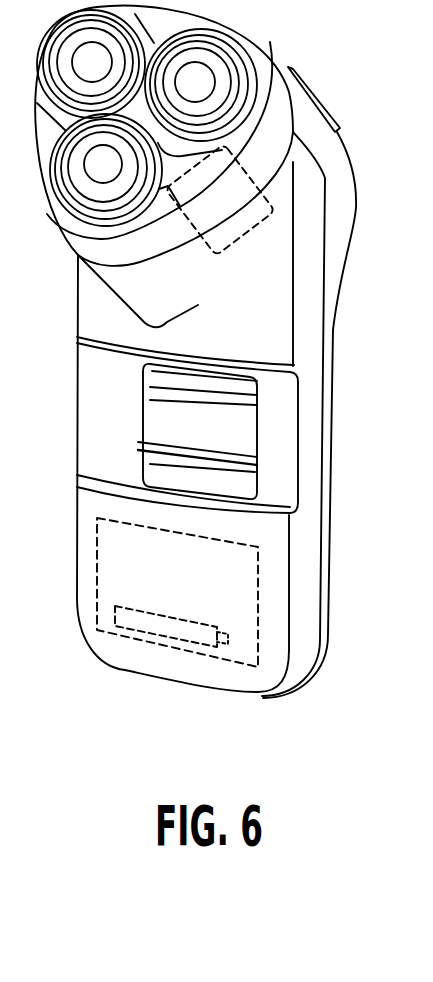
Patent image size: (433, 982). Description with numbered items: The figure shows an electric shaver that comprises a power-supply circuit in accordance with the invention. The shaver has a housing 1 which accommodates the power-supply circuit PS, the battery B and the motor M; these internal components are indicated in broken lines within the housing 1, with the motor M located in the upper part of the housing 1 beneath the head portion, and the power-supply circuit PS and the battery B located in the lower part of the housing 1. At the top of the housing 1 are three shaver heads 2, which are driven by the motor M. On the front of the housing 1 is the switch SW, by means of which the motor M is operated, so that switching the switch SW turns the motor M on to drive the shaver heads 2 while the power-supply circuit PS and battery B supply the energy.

The housing 1 is at (267, 327).
The shaver heads 2 is at (53, 35).
The motor M is at (253, 228).
The switch SW is at (163, 420).
The power-supply circuit PS is at (260, 590).
The battery B is at (139, 623).